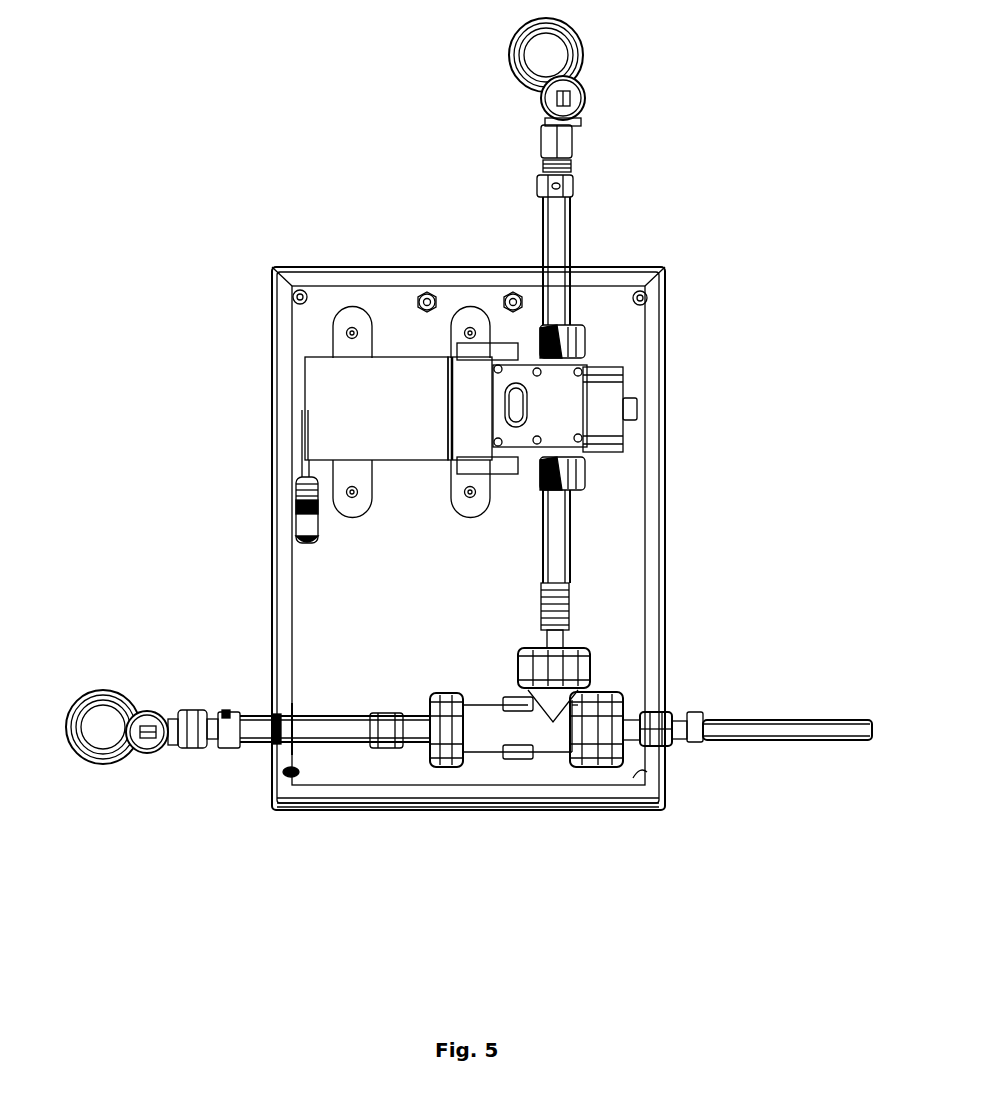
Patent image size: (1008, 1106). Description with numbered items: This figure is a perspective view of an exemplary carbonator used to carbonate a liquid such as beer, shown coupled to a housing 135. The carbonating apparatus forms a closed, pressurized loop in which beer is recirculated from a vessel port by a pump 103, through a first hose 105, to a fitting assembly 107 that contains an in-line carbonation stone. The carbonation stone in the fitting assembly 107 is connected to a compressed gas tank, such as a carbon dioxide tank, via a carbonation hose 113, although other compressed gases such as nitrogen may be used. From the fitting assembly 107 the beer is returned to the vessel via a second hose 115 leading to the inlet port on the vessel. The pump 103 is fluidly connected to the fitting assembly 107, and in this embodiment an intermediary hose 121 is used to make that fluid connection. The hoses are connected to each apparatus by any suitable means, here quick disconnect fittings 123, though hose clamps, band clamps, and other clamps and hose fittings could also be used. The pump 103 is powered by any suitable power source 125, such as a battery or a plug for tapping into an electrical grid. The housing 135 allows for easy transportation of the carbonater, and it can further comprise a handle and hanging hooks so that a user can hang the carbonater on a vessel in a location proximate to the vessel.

The pump 103 is at (377, 400).
The first hose 105 is at (572, 235).
The fitting assembly 107 is at (551, 740).
The carbonation hose 113 is at (718, 717).
The second hose 115 is at (312, 714).
The intermediary hose 121 is at (570, 550).
The quick disconnect fittings 123 is at (512, 53).
The power source 125 is at (293, 512).
The housing 135 is at (665, 283).